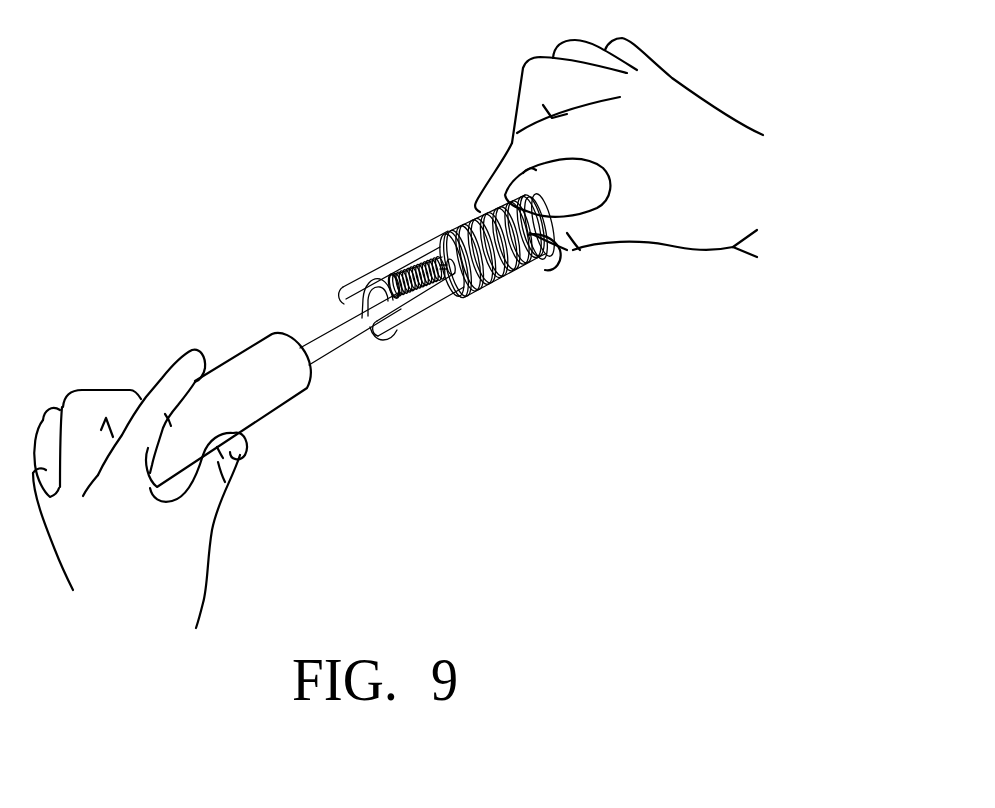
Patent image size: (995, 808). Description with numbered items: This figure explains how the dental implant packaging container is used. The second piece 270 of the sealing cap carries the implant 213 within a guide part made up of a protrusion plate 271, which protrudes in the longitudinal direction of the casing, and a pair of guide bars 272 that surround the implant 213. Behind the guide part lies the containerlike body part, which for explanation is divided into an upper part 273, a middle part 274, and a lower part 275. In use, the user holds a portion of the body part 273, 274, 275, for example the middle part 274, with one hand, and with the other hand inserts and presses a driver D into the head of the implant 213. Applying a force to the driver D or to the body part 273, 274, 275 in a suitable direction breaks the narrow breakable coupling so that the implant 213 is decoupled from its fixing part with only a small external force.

The driver D is at (268, 351).
The implant 213 is at (398, 263).
The second piece 270 is at (452, 325).
The protrusion plate 271 is at (355, 320).
The guide bars 272 is at (403, 335).
The upper part 273 is at (472, 300).
The middle part 274 is at (503, 270).
The lower part 275 is at (544, 264).